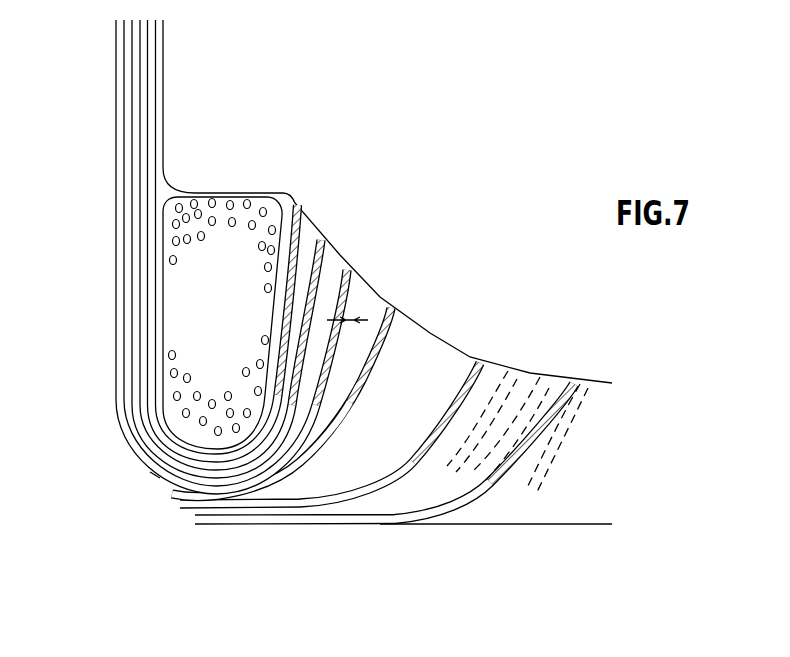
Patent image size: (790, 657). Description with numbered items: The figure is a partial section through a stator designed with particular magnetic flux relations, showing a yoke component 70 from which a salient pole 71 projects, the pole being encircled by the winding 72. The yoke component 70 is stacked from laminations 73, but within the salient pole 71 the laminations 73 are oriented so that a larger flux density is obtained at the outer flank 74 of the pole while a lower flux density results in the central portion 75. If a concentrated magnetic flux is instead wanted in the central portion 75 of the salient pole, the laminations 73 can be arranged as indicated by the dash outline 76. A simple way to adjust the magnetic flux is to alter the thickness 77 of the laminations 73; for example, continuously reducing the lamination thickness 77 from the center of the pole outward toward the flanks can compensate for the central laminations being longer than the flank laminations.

The yoke component 70 is at (145, 141).
The salient pole 71 is at (612, 559).
The winding 72 is at (226, 320).
The laminations 73 is at (168, 486).
The outer flank 74 is at (318, 180).
The central portion 75 is at (604, 350).
The dash outline 76 is at (541, 464).
The thickness 77 is at (350, 304).